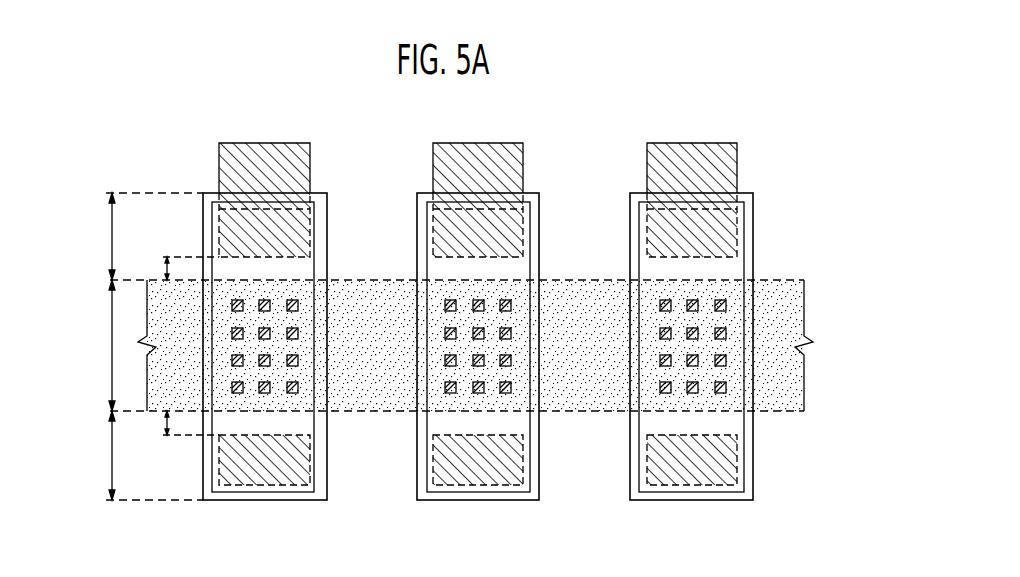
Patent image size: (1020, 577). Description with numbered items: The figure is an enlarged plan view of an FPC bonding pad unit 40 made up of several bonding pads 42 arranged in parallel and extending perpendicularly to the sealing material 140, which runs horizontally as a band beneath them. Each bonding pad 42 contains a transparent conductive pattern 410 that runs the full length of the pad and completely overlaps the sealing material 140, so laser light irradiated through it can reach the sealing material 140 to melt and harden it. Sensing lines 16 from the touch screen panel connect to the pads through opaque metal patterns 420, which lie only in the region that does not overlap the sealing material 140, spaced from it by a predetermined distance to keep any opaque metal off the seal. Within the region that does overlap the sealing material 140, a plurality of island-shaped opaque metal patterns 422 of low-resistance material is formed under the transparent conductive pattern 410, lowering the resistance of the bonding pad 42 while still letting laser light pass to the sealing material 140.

The FPC bonding pad unit 40 is at (752, 124).
The sensing line 16 is at (737, 165).
The opaque metal pattern 420 is at (647, 232).
The sealing material 140 is at (787, 290).
The island-shaped opaque metal pattern 422 is at (297, 358).
The bonding pad 42 is at (753, 479).
The transparent conductive pattern 410 is at (663, 492).